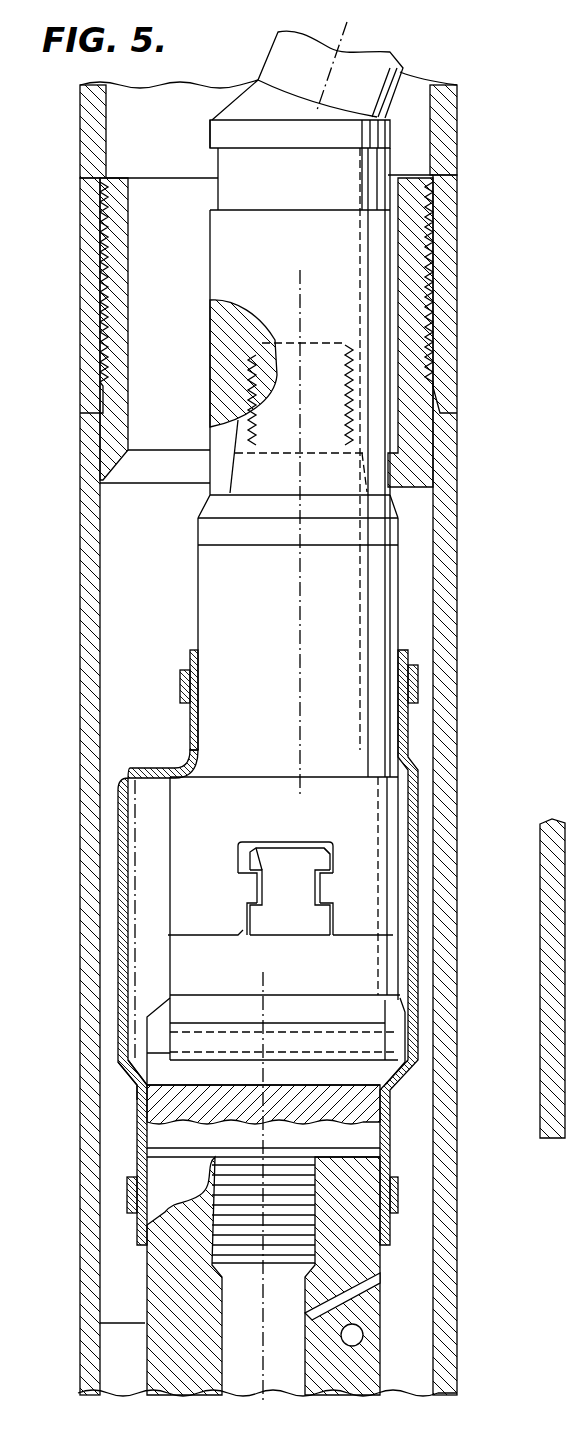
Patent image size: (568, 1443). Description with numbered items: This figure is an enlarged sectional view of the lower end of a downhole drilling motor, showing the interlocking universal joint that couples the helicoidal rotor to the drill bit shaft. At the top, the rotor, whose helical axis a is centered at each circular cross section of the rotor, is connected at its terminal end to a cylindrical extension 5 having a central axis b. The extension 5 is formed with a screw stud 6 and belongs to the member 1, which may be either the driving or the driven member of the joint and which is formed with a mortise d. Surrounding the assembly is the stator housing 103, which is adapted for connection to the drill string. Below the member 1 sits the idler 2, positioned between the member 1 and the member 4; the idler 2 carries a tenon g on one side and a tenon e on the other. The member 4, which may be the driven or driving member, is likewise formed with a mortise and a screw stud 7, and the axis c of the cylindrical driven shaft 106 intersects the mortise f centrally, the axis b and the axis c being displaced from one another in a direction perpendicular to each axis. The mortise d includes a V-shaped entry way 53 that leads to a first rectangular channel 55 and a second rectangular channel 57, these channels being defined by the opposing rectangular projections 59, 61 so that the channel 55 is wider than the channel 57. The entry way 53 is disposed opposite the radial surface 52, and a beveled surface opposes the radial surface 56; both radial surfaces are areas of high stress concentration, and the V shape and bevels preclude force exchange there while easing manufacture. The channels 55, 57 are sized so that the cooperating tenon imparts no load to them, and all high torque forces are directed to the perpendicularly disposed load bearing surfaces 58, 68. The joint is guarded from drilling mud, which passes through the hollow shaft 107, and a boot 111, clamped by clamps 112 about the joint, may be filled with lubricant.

The member 1 is at (172, 822).
The idler 2 is at (390, 960).
The member 4 is at (160, 1104).
The cylindrical extension 5 is at (215, 568).
The screw stud 6 is at (265, 367).
The screw stud 7 is at (228, 1230).
The radial surface 52 is at (327, 937).
The V-shaped entry way 53 is at (333, 934).
The first rectangular channel 55 is at (333, 848).
The radial surface 56 is at (328, 842).
The second rectangular channel 57 is at (250, 903).
The load bearing surface 58 is at (360, 935).
The first rectangular projection 59 is at (330, 887).
The rectangular projection 61 is at (247, 882).
The load bearing surface 68 is at (327, 917).
The stator housing 103 is at (450, 259).
The driven shaft 106 is at (97, 1323).
The hollow shaft 107 is at (348, 1343).
The boot 111 is at (410, 805).
The clamps 112 is at (180, 683).
The helical axis a is at (347, 28).
The central axis b is at (300, 305).
The central axis c is at (250, 1000).
The mortise d is at (333, 852).
The tenon e is at (395, 1040).
The mortise f is at (155, 1067).
The tenon g is at (260, 858).